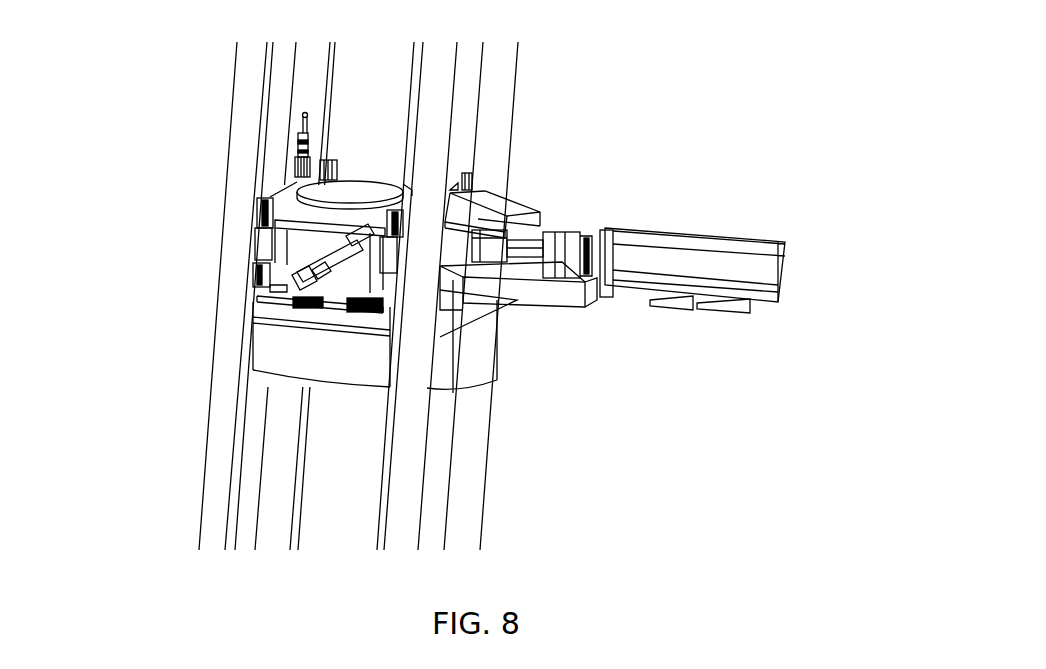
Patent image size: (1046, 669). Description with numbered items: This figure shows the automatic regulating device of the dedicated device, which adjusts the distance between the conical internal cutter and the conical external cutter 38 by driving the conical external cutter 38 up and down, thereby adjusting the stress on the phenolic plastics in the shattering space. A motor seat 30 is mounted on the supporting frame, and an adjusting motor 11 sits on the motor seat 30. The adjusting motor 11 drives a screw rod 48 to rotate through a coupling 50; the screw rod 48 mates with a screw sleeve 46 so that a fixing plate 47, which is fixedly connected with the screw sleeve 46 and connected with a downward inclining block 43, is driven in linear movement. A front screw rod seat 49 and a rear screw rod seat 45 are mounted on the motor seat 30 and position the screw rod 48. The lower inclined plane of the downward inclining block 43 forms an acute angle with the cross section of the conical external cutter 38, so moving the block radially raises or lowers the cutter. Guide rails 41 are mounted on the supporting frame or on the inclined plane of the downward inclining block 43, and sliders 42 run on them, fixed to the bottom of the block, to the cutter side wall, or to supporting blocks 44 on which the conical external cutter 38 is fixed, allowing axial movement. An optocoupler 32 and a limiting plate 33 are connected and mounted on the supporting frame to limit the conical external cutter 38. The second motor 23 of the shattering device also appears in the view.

The adjusting motor 11 is at (782, 262).
The second motor 23 is at (207, 353).
The motor seat 30 is at (585, 311).
The optocoupler 32 is at (297, 117).
The limiting plate 33 is at (295, 169).
The conical external cutter 38 is at (483, 387).
The guide rails 41 is at (262, 290).
The sliders 42 is at (262, 286).
The downward inclining block 43 is at (298, 287).
The supporting blocks 44 is at (262, 216).
The rear screw rod seat 45 is at (533, 207).
The screw sleeve 46 is at (534, 235).
The fixing plate 47 is at (567, 229).
The screw rod 48 is at (600, 232).
The front screw rod seat 49 is at (613, 230).
The coupling 50 is at (622, 233).